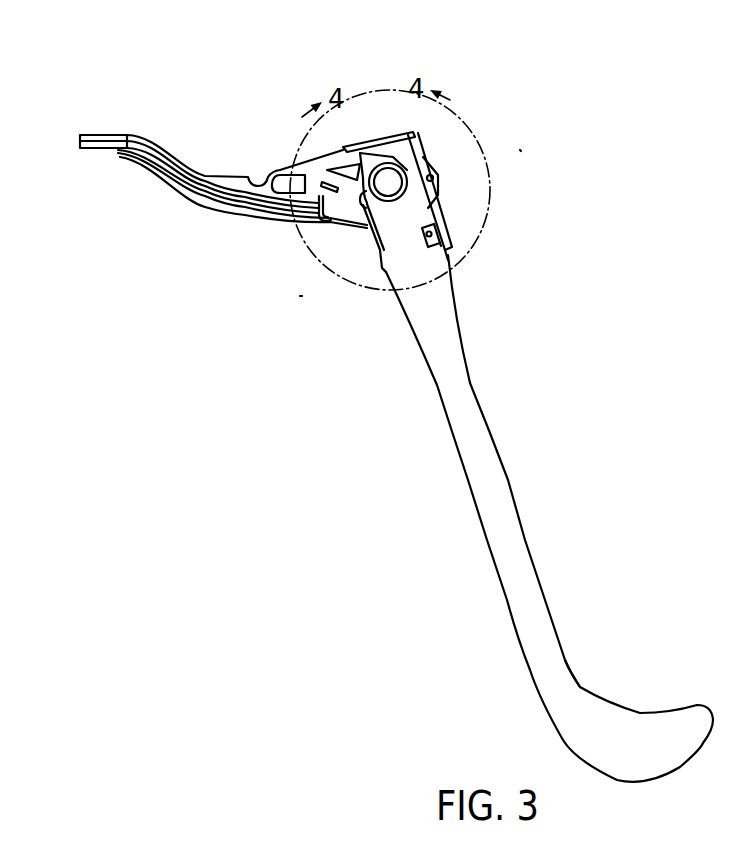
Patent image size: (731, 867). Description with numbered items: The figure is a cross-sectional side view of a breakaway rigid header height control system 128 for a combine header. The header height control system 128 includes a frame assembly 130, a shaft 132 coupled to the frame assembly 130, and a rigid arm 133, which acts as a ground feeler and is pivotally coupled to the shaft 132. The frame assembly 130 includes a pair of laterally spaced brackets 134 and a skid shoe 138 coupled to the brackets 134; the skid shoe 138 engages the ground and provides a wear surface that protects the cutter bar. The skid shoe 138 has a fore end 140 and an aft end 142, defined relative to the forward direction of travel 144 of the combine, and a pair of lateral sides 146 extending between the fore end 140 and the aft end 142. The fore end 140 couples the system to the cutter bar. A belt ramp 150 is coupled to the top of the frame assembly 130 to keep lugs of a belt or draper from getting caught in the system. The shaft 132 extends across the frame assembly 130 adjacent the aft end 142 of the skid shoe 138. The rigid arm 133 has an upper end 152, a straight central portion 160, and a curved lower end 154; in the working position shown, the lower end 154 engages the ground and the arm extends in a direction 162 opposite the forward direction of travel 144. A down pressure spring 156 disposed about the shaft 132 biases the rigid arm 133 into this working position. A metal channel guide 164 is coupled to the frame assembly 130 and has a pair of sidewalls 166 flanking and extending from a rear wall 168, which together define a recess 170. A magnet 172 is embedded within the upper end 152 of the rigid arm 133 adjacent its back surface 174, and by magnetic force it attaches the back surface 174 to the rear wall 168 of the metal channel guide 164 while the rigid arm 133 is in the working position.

The header height control system 128 is at (520, 152).
The frame assembly 130 is at (272, 134).
The shaft 132 is at (388, 194).
The rigid arm 133 is at (471, 332).
The brackets 134 is at (220, 177).
The skid shoe 138 is at (205, 202).
The fore end 140 is at (82, 126).
The aft end 142 is at (323, 277).
The forward direction of travel 144 is at (402, 717).
The lateral sides 146 is at (170, 173).
The belt ramp 150 is at (370, 146).
The upper end 152 is at (368, 271).
The lower end 154 is at (658, 678).
The spring 156 is at (322, 221).
The central portion 160 is at (538, 493).
The direction 162 is at (497, 717).
The metal channel guide 164 is at (427, 240).
The sidewalls 166 is at (382, 276).
The rear wall 168 is at (442, 241).
The recess 170 is at (452, 261).
The magnet 172 is at (438, 207).
The back surface 174 is at (430, 144).